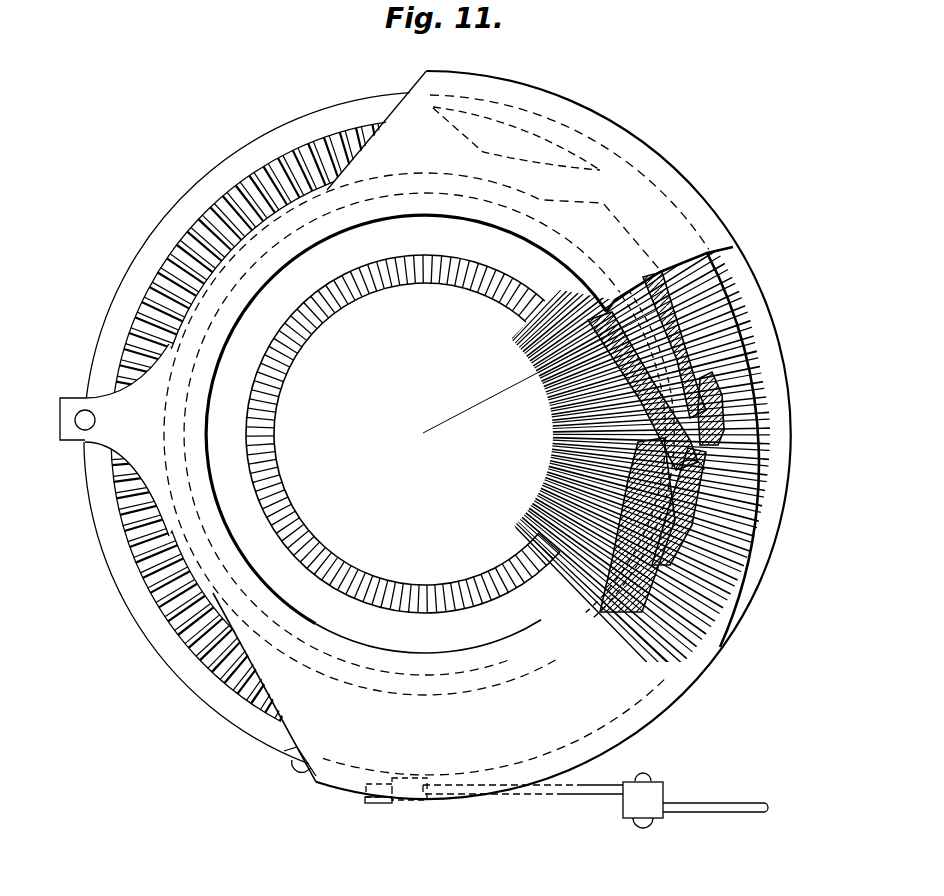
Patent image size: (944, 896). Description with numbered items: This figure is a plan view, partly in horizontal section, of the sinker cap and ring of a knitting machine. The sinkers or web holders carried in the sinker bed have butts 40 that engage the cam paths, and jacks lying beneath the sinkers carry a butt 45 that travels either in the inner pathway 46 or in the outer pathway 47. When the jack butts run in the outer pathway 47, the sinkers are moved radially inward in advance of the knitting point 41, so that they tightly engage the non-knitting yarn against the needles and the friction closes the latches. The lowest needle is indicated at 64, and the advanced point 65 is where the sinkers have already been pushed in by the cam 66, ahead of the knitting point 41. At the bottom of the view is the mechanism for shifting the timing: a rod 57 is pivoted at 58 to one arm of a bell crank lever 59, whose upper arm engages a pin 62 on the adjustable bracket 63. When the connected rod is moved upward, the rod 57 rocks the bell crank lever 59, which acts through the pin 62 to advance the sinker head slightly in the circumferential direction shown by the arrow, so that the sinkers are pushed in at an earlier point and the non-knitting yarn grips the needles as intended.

The butts 40 is at (602, 573).
The knitting point 41 is at (643, 343).
The butt 45 is at (633, 585).
The inner pathway 46 is at (737, 553).
The outer pathway 47 is at (720, 600).
The rod 57 is at (718, 805).
The pivot 58 is at (648, 781).
The bell crank lever 59 is at (538, 790).
The pin 62 is at (380, 803).
The adjustable bracket 63 is at (318, 776).
The lowest needle 64 is at (587, 325).
The advanced point 65 is at (607, 322).
The cam 66 is at (733, 373).